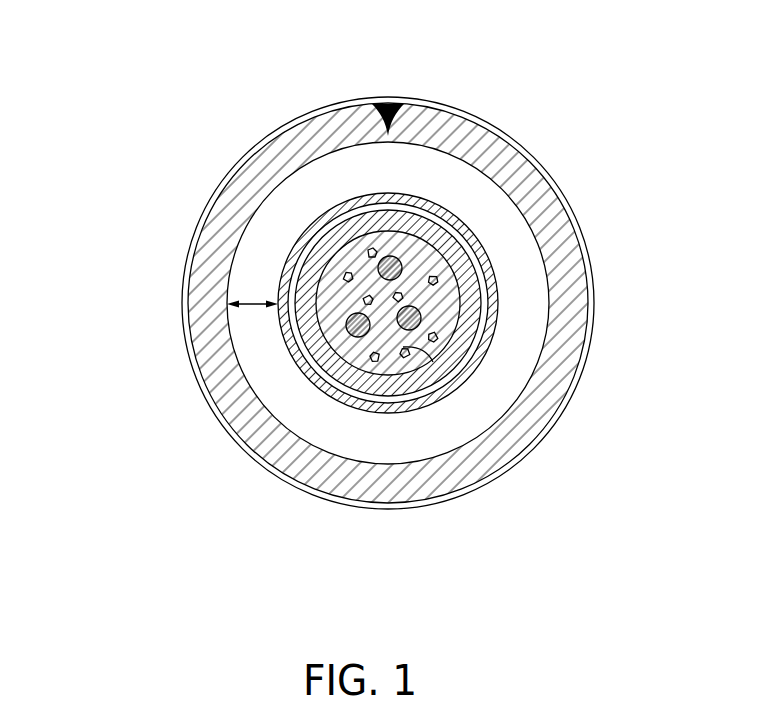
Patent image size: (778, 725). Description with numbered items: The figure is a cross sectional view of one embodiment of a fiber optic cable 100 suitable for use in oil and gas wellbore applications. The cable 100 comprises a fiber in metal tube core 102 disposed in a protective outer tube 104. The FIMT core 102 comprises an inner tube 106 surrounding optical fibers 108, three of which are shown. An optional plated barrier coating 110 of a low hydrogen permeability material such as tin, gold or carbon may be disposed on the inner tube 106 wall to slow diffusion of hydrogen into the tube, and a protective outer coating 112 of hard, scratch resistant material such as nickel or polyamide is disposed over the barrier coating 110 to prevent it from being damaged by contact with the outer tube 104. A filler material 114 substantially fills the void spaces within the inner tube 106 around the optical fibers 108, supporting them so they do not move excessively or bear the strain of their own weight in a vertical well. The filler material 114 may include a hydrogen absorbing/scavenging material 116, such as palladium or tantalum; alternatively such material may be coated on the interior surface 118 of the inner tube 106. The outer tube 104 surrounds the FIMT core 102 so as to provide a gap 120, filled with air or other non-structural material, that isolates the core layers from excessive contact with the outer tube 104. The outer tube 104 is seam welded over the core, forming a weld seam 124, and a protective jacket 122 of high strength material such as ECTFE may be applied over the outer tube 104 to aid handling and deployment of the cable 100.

The fiber optic cable 100 is at (586, 140).
The fiber in metal tube (FIMT) core 102 is at (389, 186).
The protective outer tube 104 is at (190, 235).
The inner tube 106 is at (436, 228).
The optical fibers 108 is at (353, 333).
The plated barrier coating 110 is at (352, 218).
The protective outer coating 112 is at (478, 252).
The filler material 114 is at (443, 303).
The hydrogen absorbing/scavenging material 116 is at (442, 337).
The interior surface of the inner tube 118 is at (400, 356).
The gap 120 is at (248, 290).
The protective jacket 122 is at (590, 347).
The weld seam 124 is at (383, 88).